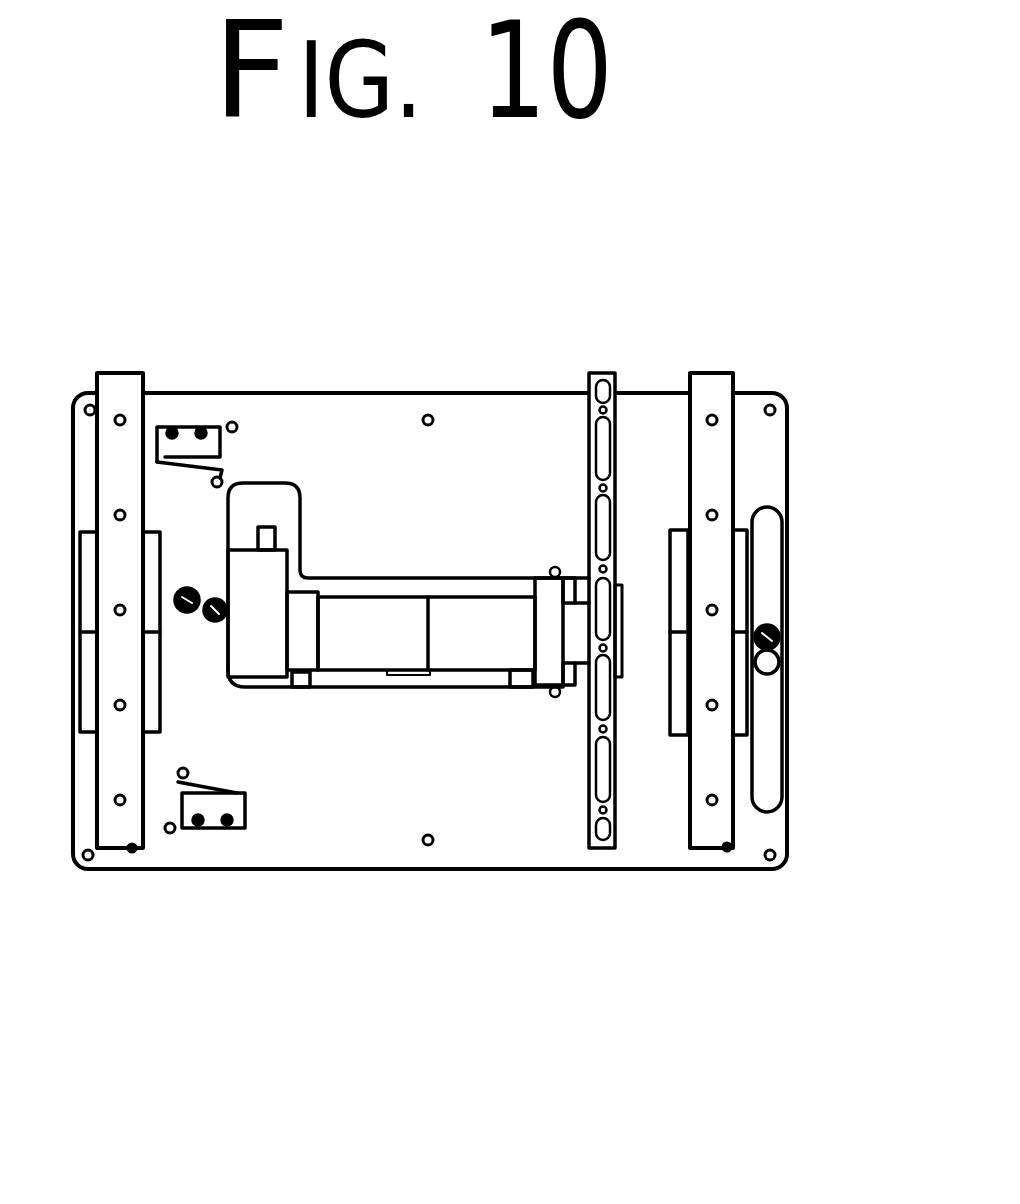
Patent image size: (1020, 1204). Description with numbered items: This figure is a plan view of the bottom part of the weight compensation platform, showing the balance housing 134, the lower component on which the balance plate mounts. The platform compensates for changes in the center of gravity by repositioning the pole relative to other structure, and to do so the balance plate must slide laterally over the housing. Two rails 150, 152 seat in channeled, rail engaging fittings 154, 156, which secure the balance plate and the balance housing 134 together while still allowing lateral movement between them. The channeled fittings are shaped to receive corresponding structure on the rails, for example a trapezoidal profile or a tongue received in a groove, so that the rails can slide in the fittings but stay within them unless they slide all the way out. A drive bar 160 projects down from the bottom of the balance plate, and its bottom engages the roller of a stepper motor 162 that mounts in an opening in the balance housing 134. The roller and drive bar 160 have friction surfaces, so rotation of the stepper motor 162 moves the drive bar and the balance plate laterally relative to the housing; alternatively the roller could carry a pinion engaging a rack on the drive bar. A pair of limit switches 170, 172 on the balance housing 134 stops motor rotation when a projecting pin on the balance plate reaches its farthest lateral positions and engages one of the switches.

The balance housing 134 is at (333, 420).
The rail 150 is at (133, 373).
The rail 152 is at (732, 373).
The rail engaging fitting 154 is at (153, 715).
The rail engaging fitting 156 is at (677, 723).
The drive bar 160 is at (620, 380).
The stepper motor 162 is at (350, 628).
The limit switch 170 is at (197, 422).
The limit switch 172 is at (213, 822).